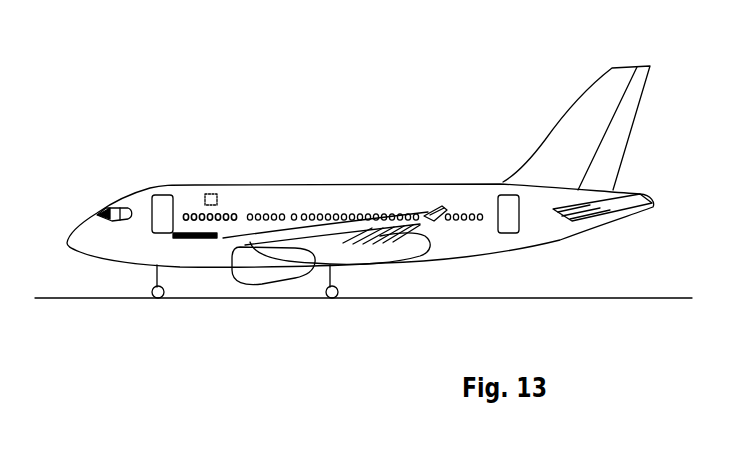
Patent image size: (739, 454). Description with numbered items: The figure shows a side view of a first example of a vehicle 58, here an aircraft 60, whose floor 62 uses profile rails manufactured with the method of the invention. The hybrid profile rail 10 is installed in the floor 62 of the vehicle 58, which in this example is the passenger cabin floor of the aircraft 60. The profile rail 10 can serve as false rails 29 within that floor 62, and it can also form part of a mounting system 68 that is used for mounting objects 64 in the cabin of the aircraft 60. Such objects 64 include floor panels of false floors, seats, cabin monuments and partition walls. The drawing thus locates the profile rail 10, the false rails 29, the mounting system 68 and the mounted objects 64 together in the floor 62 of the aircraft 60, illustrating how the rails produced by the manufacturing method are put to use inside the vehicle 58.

The vehicle 58 is at (138, 103).
The aircraft 60 is at (360, 202).
The profile rail 10 is at (185, 231).
The false rails 29 is at (191, 228).
The objects 64 is at (216, 194).
The mounting system 68 is at (223, 230).
The floor 62 is at (175, 242).